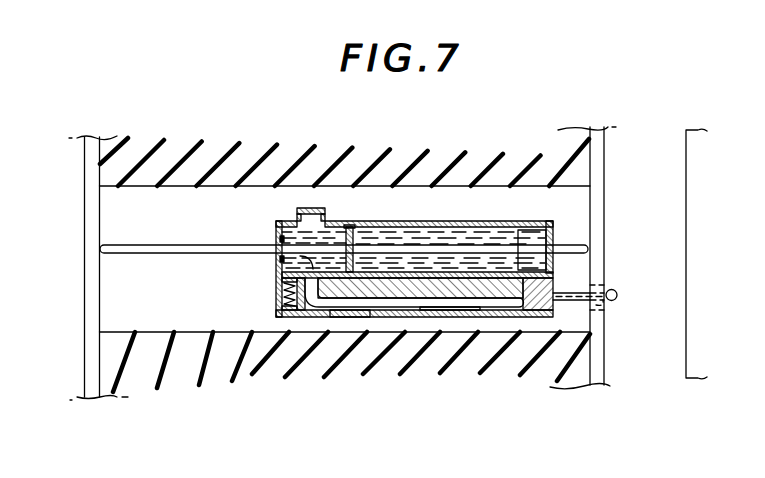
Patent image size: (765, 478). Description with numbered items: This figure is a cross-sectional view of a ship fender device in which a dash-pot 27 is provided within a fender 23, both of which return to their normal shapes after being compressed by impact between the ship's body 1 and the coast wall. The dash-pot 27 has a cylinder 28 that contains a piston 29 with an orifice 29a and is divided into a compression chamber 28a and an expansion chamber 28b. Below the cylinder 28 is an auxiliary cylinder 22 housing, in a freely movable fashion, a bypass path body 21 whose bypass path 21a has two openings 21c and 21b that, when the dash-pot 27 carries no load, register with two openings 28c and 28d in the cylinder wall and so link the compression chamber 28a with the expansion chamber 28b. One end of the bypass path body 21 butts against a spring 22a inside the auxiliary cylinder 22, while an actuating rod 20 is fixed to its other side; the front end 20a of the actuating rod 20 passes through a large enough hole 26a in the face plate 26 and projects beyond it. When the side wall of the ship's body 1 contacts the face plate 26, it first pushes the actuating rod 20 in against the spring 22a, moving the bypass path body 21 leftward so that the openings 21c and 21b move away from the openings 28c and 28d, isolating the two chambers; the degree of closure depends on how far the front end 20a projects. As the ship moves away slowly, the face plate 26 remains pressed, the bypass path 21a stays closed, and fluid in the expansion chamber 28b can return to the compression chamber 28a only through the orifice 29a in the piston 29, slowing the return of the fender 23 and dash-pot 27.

The ship's body 1 is at (709, 198).
The actuating rod 20 is at (571, 301).
The front end 20a is at (617, 296).
The bypass path body 21 is at (554, 288).
The bypass path 21a is at (441, 318).
The opening 21b is at (308, 318).
The opening 21c is at (524, 286).
The auxiliary cylinder 22 is at (283, 318).
The spring 22a is at (285, 294).
The fender 23 is at (466, 153).
The face plate 26 is at (597, 147).
The hole 26a is at (607, 311).
The dash-pot 27 is at (349, 319).
The cylinder 28 is at (554, 234).
The compression chamber 28a is at (434, 239).
The expansion chamber 28b is at (277, 225).
The opening 28c is at (526, 268).
The opening 28d is at (311, 264).
The piston 29 is at (368, 221).
The orifice 29a is at (351, 230).